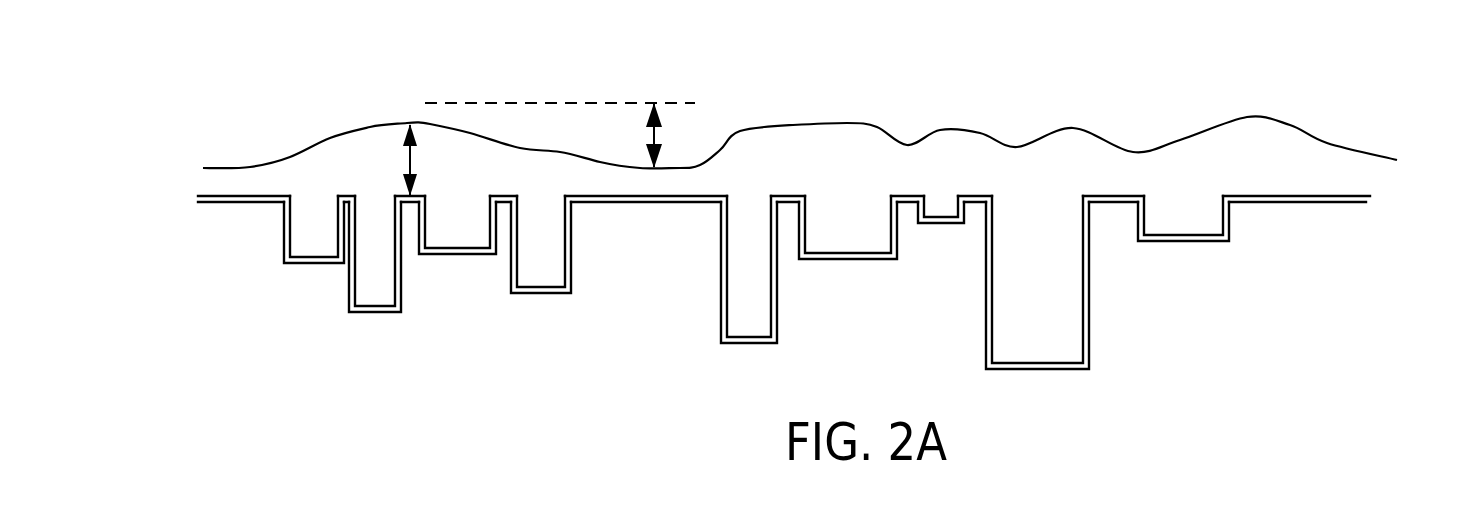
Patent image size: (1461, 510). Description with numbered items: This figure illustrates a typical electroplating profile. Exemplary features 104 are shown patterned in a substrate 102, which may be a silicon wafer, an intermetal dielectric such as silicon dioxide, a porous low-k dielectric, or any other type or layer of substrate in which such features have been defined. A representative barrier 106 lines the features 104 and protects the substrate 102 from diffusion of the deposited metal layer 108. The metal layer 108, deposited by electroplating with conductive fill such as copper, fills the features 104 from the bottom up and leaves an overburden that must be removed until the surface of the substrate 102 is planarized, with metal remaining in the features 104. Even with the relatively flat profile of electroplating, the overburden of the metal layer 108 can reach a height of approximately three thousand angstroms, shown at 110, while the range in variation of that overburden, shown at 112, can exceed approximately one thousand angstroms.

The substrate 102 is at (773, 290).
The features 104 is at (268, 231).
The barrier 106 is at (198, 198).
The metal layer 108 is at (281, 173).
The height of overburden 110 is at (408, 155).
The range in variation of overburden 112 is at (655, 132).